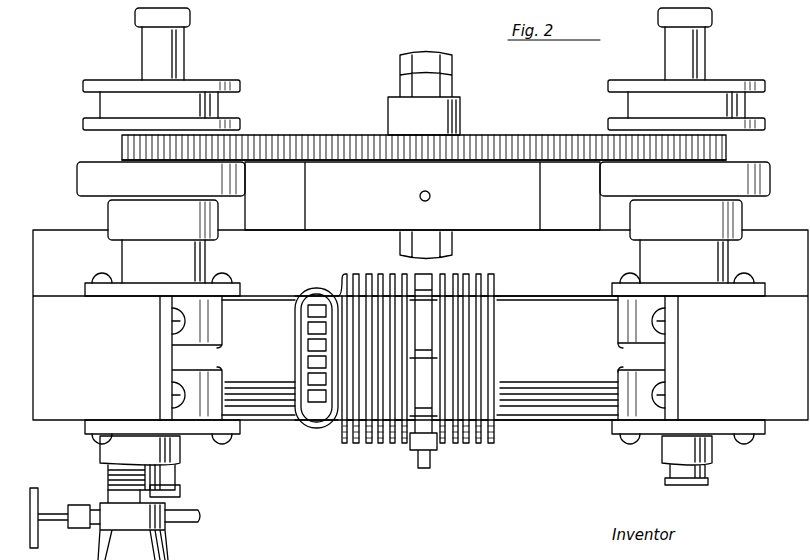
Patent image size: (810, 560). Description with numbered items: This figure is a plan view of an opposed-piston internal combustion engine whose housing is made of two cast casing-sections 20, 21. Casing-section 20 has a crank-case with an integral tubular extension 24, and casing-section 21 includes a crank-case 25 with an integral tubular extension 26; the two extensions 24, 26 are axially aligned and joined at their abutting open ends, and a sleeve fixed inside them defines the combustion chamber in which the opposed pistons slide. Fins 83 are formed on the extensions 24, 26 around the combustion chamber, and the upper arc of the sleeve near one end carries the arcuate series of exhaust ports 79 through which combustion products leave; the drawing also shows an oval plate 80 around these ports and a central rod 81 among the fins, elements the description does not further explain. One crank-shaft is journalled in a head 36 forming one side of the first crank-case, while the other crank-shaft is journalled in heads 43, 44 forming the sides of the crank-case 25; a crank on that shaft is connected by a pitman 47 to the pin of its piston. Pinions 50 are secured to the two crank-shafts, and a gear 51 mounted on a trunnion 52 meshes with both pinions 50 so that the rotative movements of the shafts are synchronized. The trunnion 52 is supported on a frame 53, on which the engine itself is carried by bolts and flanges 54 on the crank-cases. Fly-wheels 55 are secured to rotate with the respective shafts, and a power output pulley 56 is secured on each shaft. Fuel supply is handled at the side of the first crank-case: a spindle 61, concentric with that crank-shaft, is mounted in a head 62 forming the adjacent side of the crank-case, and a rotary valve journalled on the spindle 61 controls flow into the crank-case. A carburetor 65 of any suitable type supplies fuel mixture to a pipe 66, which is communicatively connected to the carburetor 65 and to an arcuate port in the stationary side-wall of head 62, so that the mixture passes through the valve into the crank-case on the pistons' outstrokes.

The casing-section 20 is at (278, 293).
The casing-section 21 is at (548, 364).
The tubular extension 24 is at (258, 357).
The crank-case 25 is at (645, 330).
The tubular extension 26 is at (532, 300).
The head 36 is at (163, 241).
The head 43 is at (652, 292).
The head 44 is at (652, 436).
The pitman 47 is at (545, 232).
The pinions 50 is at (114, 151).
The gear 51 is at (528, 138).
The trunnion 52 is at (455, 92).
The frame 53 is at (333, 291).
The bolts and flanges 54 is at (178, 396).
The fly-wheels 55 is at (423, 179).
The power output pulley 56 is at (218, 105).
The spindle 61 is at (180, 492).
The head 62 is at (200, 432).
The carburetor 65 is at (165, 530).
The pipe 66 is at (108, 482).
The exhaust ports 79 is at (312, 362).
The oval contact plate 80 is at (312, 424).
The center rod 81 is at (418, 454).
The fins 83 is at (482, 442).